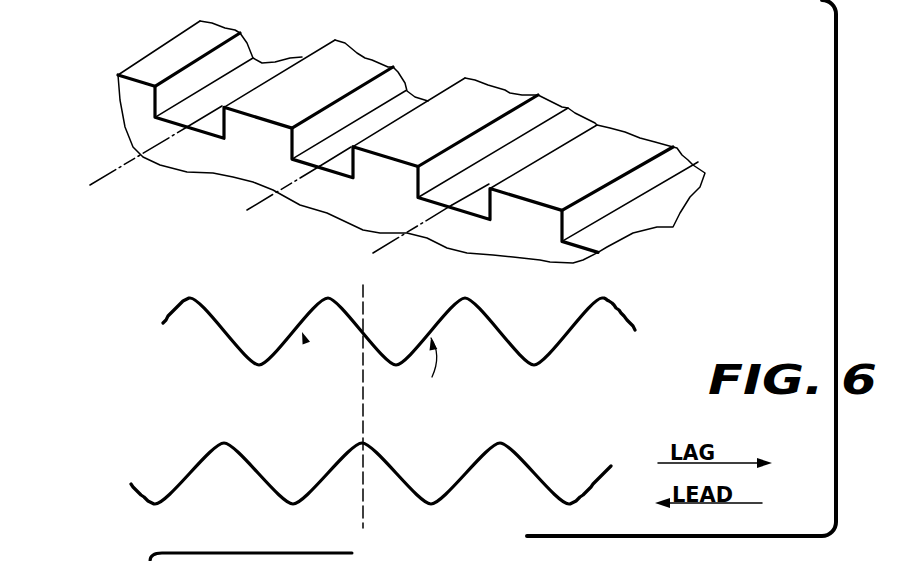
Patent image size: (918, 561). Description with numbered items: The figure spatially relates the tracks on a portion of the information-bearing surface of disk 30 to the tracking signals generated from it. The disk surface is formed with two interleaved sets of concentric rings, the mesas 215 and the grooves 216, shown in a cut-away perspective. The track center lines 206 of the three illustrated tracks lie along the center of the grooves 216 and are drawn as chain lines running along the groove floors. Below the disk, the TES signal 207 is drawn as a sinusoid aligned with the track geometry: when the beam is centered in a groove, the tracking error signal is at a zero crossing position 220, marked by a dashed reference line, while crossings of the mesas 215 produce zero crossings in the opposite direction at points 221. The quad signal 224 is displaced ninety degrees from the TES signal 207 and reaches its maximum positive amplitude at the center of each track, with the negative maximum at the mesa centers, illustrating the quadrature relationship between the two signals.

The disk 30 is at (141, 64).
The track center lines 206 is at (370, 253).
The TES signal 207 is at (177, 312).
The mesas 215 is at (615, 135).
The grooves 216 is at (420, 88).
The zero crossing position 220 is at (364, 301).
The points 221 is at (302, 333).
The quad signal 224 is at (194, 470).